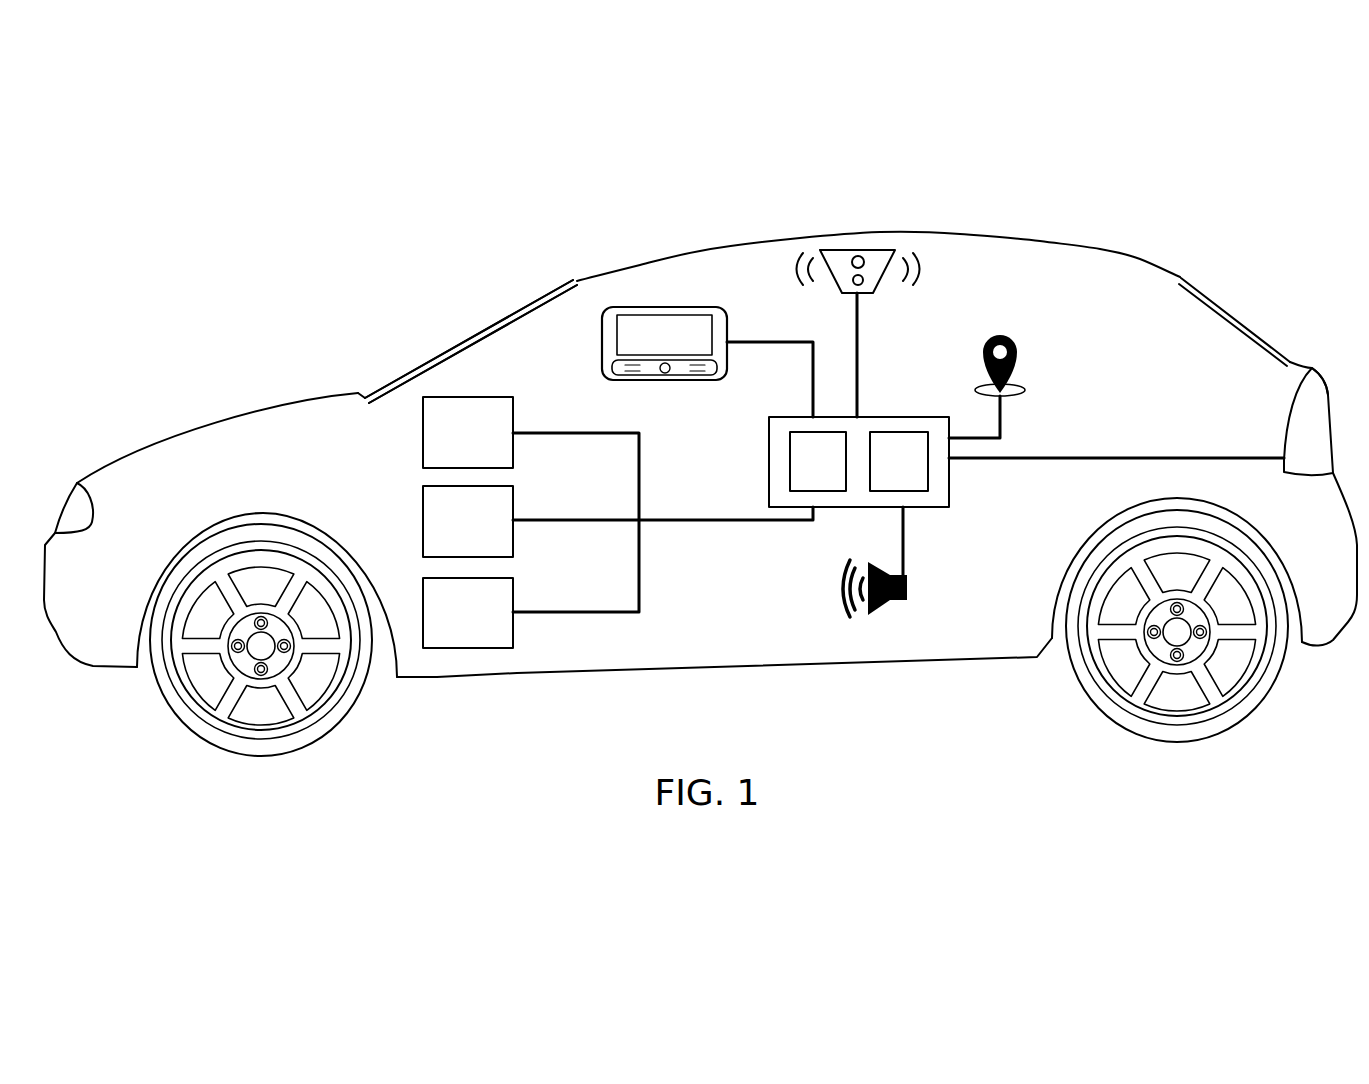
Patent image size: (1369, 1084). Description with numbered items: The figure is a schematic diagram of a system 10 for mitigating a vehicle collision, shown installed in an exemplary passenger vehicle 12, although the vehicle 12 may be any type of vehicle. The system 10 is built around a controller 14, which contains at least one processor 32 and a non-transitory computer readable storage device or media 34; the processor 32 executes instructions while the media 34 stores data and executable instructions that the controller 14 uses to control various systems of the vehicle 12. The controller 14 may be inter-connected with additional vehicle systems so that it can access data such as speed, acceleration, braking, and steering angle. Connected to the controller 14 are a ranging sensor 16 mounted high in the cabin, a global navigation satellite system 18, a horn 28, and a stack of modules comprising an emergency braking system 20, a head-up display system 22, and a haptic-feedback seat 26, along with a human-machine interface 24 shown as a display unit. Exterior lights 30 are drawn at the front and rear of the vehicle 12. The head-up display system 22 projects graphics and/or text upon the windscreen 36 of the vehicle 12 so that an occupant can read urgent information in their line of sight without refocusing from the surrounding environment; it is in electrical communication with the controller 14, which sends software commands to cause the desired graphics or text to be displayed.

The system for mitigating a vehicle collision 10 is at (421, 334).
The vehicle 12 is at (1083, 244).
The controller 14 is at (949, 505).
The ranging sensor 16 is at (873, 293).
The global navigation satellite system (GNSS) 18 is at (1017, 346).
The emergency braking system 20 is at (468, 613).
The head-up display (HUD) system 22 is at (531, 504).
The human-machine interface (HMI) 24 is at (602, 337).
The haptic-feedback seat 26 is at (468, 521).
The horn 28 is at (907, 585).
The exterior light 30 is at (90, 489).
The processor 32 is at (818, 461).
The non-transitory computer readable storage device or media 34 is at (899, 461).
The windscreen 36 is at (552, 298).